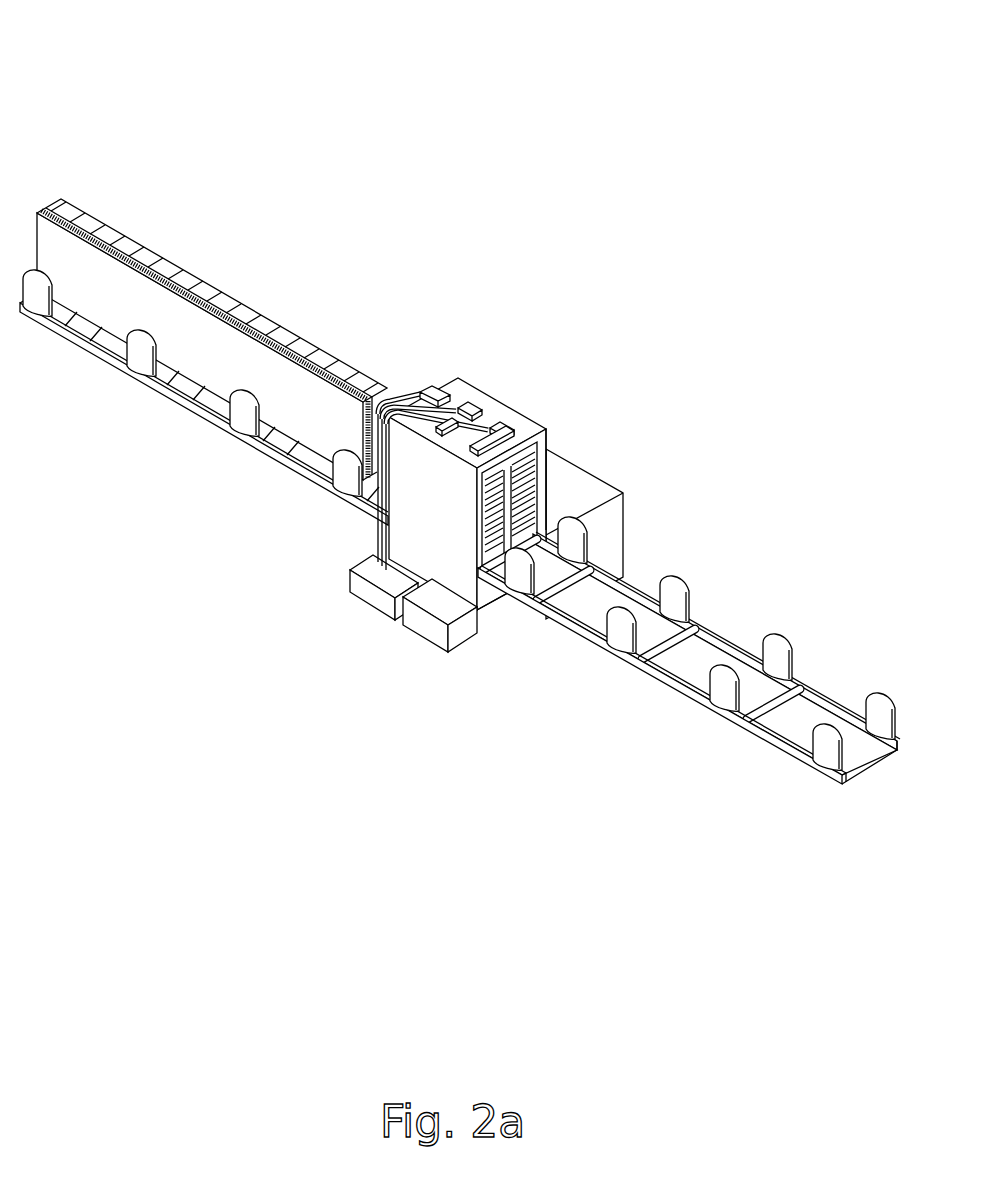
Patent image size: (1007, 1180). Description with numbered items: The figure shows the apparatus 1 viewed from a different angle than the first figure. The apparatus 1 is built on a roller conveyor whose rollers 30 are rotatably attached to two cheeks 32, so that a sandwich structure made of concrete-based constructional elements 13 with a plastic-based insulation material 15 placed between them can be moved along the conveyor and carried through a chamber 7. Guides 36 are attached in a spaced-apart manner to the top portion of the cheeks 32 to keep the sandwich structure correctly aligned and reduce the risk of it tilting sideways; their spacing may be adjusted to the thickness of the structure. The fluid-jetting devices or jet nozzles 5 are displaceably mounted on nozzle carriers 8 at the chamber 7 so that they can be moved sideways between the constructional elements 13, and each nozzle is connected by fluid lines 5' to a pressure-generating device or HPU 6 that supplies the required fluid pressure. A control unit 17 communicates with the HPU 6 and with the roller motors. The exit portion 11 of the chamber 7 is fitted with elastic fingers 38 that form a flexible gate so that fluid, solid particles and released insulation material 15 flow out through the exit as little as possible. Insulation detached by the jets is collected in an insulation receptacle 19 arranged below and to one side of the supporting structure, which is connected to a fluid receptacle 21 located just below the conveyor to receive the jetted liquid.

The apparatus 1 is at (682, 162).
The fluid-jetting device 5 is at (446, 374).
The fluid line 5' is at (318, 500).
The pressure-generating device 6 is at (352, 596).
The chamber 7 is at (459, 548).
The nozzle carrier 8 is at (514, 432).
The exit portion 11 is at (566, 490).
The concrete-based constructional element 13 is at (43, 235).
The plastic-based insulation material 15 is at (128, 250).
The control unit 17 is at (418, 634).
The insulation receptacle 19 is at (578, 478).
The fluid receptacle 21 is at (497, 612).
The roller 30 is at (203, 395).
The cheek 32 is at (78, 340).
The guide 36 is at (128, 354).
The elastic finger 38 is at (537, 447).